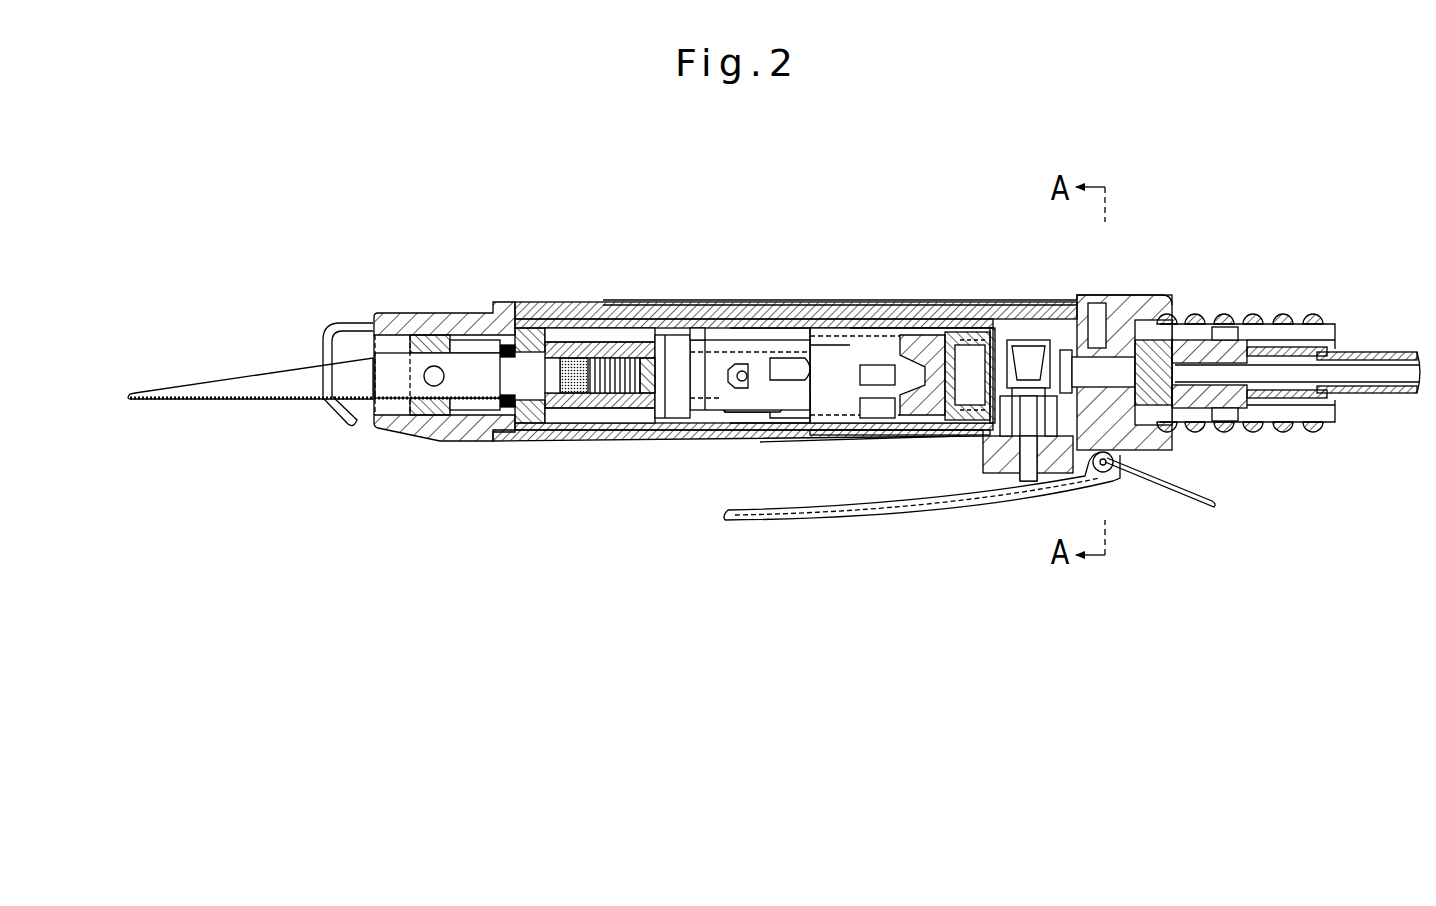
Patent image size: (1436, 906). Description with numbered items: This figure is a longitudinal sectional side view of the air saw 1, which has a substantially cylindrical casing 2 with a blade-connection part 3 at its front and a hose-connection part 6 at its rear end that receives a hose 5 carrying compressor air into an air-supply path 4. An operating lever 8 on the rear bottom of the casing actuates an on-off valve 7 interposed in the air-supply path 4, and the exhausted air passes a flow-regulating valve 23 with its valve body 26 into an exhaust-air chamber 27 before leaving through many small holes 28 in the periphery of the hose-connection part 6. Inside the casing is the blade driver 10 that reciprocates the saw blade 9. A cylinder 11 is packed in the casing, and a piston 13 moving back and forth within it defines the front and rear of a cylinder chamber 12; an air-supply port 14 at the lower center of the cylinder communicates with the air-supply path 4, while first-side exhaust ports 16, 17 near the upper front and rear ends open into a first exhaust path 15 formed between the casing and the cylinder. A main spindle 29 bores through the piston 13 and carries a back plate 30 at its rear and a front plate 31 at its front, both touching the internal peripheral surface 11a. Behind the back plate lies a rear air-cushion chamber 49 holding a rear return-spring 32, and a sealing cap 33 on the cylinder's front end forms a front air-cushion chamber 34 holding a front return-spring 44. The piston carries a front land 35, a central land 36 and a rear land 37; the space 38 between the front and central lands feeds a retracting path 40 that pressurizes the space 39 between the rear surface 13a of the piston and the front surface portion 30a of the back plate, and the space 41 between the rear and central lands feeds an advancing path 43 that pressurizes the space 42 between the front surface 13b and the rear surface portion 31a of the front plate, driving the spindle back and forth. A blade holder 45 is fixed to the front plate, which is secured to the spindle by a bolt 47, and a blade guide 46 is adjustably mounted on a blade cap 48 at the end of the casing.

The air saw 1 is at (916, 276).
The casing 2 is at (823, 312).
The blade-connection part 3 is at (448, 300).
The air-supply path 4 is at (950, 432).
The hose 5 is at (1363, 352).
The hose-connection part 6 is at (1240, 320).
The on-off valve 7 is at (1037, 338).
The operating lever 8 is at (883, 518).
The saw blade 9 is at (292, 386).
The blade driver 10 is at (882, 322).
The cylinder 11 is at (785, 320).
The internal peripheral surface 11a is at (928, 326).
The cylinder chamber 12 is at (852, 442).
The piston 13 is at (718, 322).
The rear surface of the piston 13a is at (855, 322).
The front surface of the piston 13b is at (652, 412).
The air-supply port 14 is at (778, 416).
The first exhaust path 15 is at (622, 322).
The first-side exhaust port 16 is at (583, 320).
The first-side exhaust port 17 is at (985, 322).
The flow-regulating valve 23 is at (1157, 293).
The valve body 26 is at (1112, 468).
The exhaust-air chamber 27 is at (1098, 310).
The small holes 28 is at (1193, 324).
The main spindle 29 is at (873, 426).
The back plate 30 is at (912, 432).
The front surface portion of the back plate 30a is at (896, 334).
The front plate 31 is at (612, 422).
The rear surface portion of the front plate 31a is at (645, 422).
The rear return-spring 32 is at (962, 426).
The sealing cap 33 is at (525, 422).
The front air-cushion chamber 34 is at (573, 422).
The front land 35 is at (693, 322).
The central land 36 is at (742, 320).
The rear land 37 is at (810, 322).
The space 38 is at (690, 396).
The space 39 is at (860, 411).
The retracting path 40 is at (805, 374).
The space 41 is at (760, 322).
The space 42 is at (660, 322).
The advancing path 43 is at (755, 422).
The front return-spring 44 is at (560, 330).
The blade holder 45 is at (424, 416).
The blade guide 46 is at (322, 340).
The bolt 47 is at (573, 432).
The blade cap 48 is at (466, 432).
The rear air-cushion chamber 49 is at (960, 326).